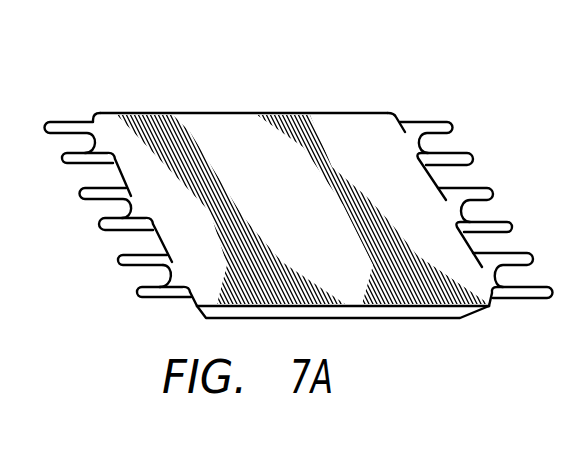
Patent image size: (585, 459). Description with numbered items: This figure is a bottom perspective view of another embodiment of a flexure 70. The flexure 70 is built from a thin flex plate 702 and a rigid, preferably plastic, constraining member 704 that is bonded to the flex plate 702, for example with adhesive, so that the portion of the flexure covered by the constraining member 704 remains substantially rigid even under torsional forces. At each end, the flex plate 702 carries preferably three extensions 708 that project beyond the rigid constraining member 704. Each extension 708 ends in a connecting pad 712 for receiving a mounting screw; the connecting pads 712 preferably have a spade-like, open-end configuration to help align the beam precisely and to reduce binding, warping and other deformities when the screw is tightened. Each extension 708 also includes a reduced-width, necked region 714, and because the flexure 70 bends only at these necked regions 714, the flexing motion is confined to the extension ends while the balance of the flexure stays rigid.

The flexure 70 is at (129, 87).
The flex plate 702 is at (290, 114).
The constraining member 704 is at (419, 319).
The extension 708 is at (122, 258).
The connecting pad 712 is at (141, 290).
The necked region 714 is at (172, 274).